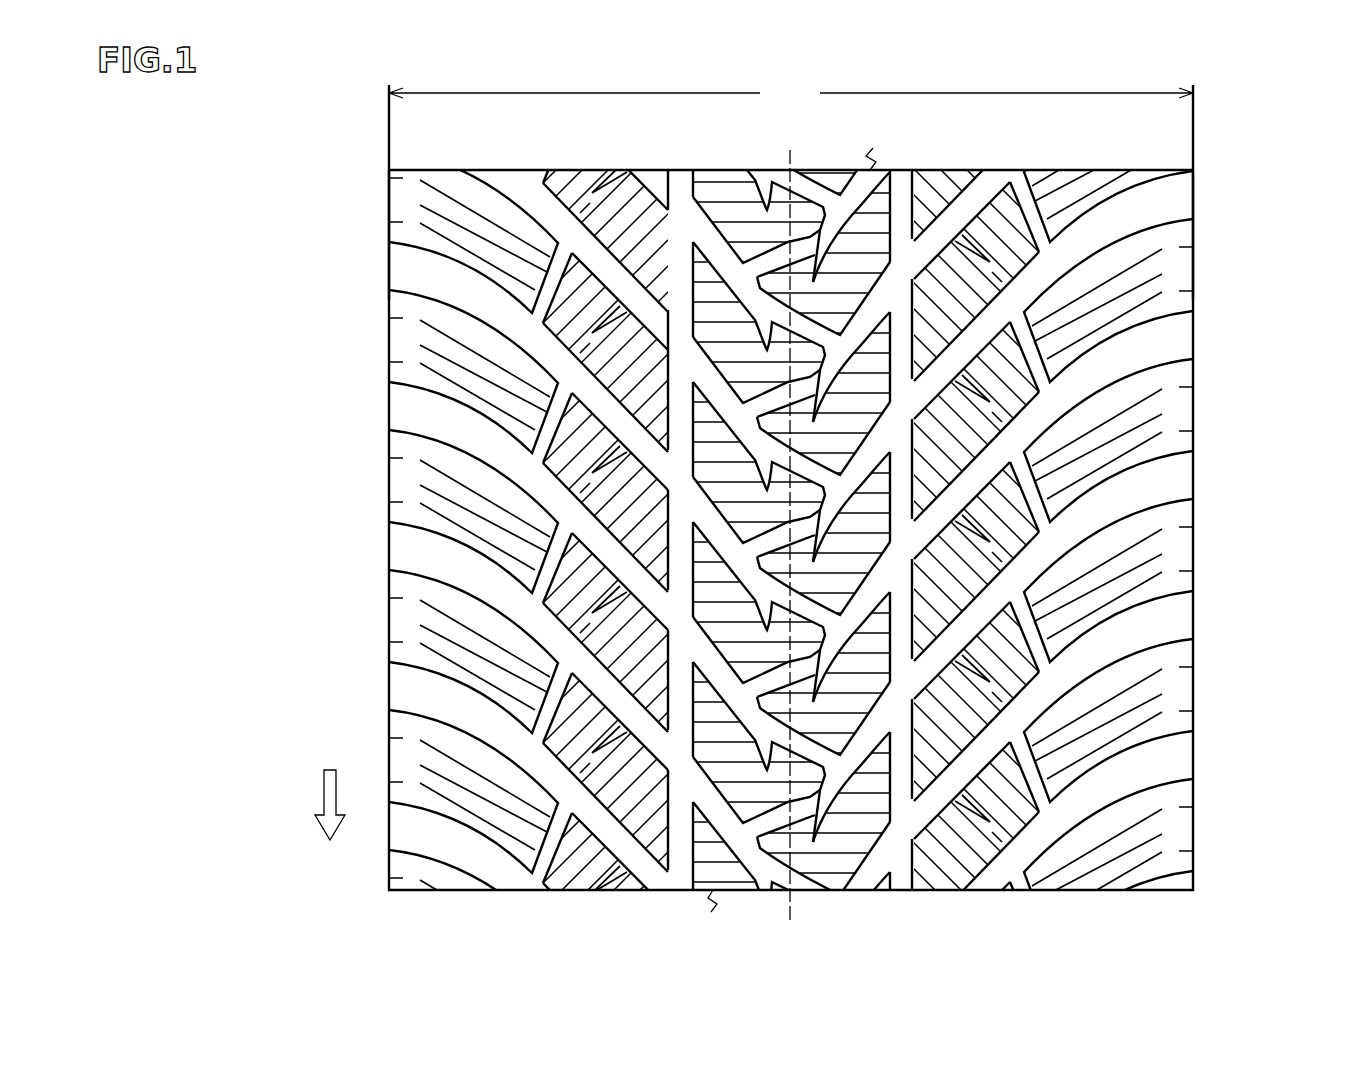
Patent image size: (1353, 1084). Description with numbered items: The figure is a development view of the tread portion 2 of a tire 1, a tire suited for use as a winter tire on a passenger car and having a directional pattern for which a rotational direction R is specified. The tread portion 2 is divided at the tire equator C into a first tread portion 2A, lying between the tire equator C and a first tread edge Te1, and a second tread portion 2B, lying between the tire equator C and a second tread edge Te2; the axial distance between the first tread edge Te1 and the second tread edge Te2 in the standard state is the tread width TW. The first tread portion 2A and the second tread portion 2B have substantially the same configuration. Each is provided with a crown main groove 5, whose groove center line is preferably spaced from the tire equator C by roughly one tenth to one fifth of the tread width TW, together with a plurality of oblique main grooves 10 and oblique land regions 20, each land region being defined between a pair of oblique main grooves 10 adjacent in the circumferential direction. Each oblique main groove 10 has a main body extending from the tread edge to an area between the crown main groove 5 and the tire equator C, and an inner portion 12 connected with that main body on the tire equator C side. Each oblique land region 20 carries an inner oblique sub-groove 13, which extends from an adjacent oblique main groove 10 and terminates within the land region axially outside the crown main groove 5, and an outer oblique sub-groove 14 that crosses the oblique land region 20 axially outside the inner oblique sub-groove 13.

The tire 1 is at (824, 162).
The tread portion 2 is at (791, 556).
The first tread portion 2A is at (611, 207).
The second tread portion 2B is at (1008, 229).
The crown main groove 5 is at (685, 217).
The oblique main grooves 10 is at (470, 291).
The inner portion 12 is at (778, 827).
The inner oblique sub-groove 13 is at (629, 750).
The outer oblique sub-groove 14 is at (548, 712).
The oblique land regions 20 is at (568, 451).
The tire equator C is at (789, 524).
The tread width TW is at (791, 93).
The first tread edge Te1 is at (389, 188).
The second tread edge Te2 is at (1193, 188).
The rotational direction R is at (330, 824).